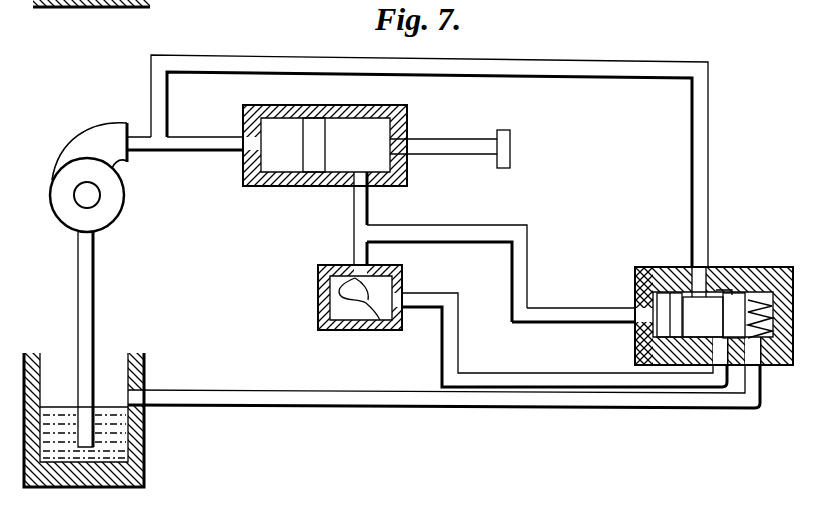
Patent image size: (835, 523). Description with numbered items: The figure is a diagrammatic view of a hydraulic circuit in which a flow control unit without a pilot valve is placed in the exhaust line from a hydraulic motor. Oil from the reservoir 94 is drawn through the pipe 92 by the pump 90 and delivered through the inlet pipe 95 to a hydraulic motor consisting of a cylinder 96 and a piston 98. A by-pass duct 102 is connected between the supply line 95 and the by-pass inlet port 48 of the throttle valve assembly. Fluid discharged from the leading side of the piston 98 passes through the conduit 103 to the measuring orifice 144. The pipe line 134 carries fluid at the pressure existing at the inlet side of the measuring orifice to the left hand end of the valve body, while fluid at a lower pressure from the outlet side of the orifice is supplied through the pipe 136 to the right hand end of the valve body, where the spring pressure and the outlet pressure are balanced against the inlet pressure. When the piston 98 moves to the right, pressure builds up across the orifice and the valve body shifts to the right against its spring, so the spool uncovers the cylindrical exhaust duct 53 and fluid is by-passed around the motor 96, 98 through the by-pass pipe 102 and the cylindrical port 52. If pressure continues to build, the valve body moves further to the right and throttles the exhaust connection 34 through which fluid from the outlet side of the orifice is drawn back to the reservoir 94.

The exhaust port 34 is at (738, 292).
The by-pass inlet port 48 is at (695, 275).
The cylindrical port 52 is at (717, 283).
The cylindrical exhaust duct 53 is at (718, 330).
The pump 90 is at (112, 208).
The conduit 92 is at (95, 285).
The tank 94 is at (137, 372).
The conduit 95 is at (197, 138).
The cylinder 96 is at (318, 113).
The piston 98 is at (310, 152).
The by-pass duct 102 is at (548, 63).
The conduit 103 is at (354, 212).
The duct 134 is at (570, 313).
The pipe 136 is at (505, 373).
The measuring orifice 144 is at (318, 297).